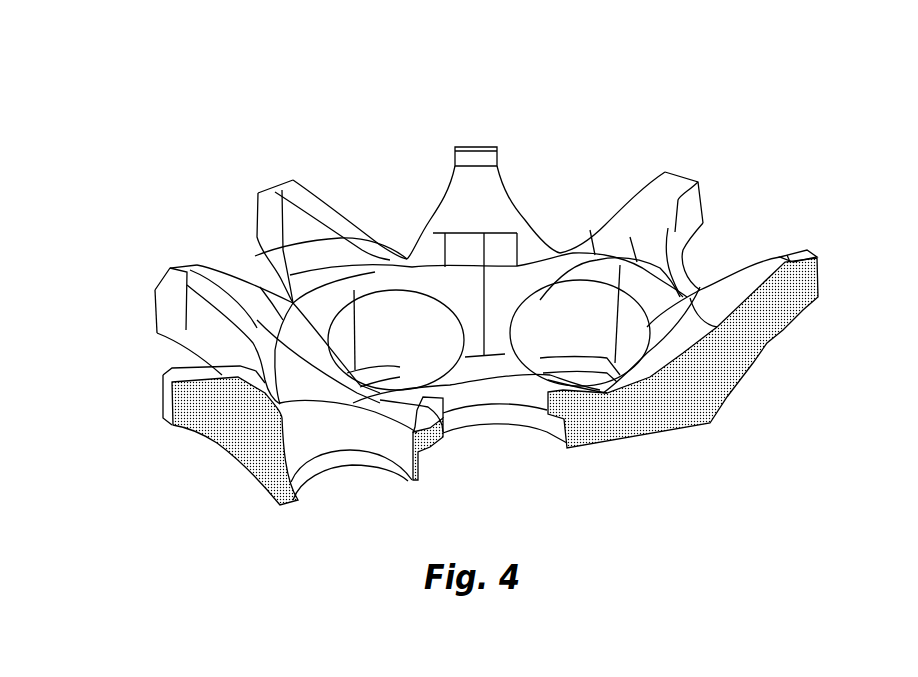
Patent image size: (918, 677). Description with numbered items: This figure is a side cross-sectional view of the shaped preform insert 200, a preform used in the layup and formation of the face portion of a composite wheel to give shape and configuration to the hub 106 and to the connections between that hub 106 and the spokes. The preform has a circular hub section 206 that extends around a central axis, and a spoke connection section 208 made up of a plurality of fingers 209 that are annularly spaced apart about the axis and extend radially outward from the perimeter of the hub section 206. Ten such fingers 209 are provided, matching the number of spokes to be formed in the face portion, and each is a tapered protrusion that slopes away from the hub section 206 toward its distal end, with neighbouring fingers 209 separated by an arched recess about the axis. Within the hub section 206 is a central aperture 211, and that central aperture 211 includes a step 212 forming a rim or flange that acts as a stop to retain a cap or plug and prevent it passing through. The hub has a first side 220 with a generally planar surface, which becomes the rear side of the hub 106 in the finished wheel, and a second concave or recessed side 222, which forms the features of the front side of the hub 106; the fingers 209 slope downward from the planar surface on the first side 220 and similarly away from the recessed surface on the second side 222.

The shaped preform insert 200 is at (216, 119).
The hub 106 is at (443, 297).
The hub section 206 is at (502, 338).
The spoke connection section 208 is at (479, 133).
The fingers 209 is at (167, 275).
The central aperture 211 is at (493, 458).
The step 212 is at (433, 445).
The first side 220 is at (603, 452).
The second side 222 is at (314, 332).